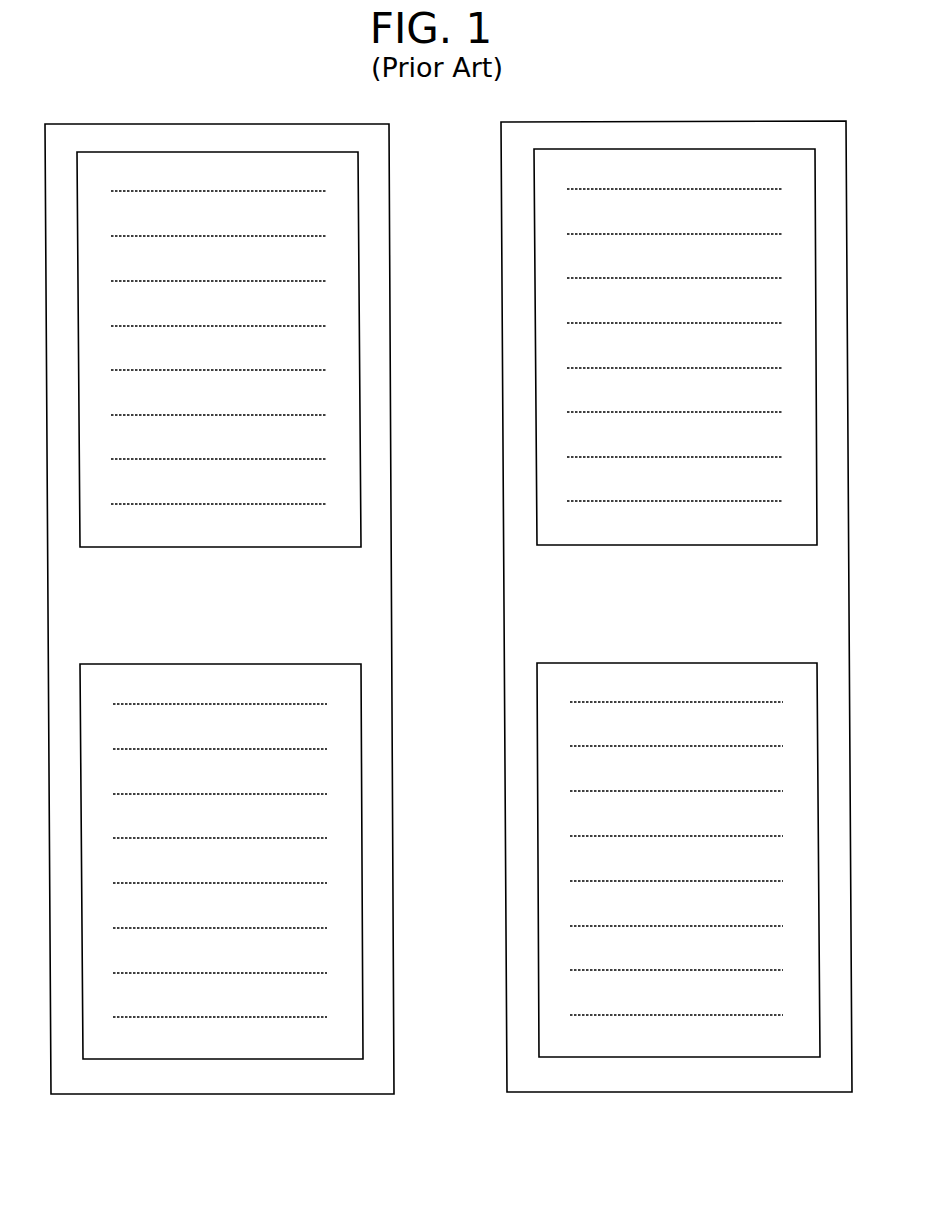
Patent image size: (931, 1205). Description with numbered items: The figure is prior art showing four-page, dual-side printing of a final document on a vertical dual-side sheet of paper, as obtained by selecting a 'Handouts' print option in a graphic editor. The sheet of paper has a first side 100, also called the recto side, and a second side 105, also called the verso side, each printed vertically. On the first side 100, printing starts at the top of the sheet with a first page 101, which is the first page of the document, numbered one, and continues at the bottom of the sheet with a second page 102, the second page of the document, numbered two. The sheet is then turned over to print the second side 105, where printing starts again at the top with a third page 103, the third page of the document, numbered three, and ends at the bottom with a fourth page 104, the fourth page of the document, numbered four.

The first side 100 is at (184, 1094).
The first page 101 is at (174, 547).
The second page 102 is at (230, 663).
The third page 103 is at (653, 545).
The fourth page 104 is at (712, 662).
The second side 105 is at (672, 1092).